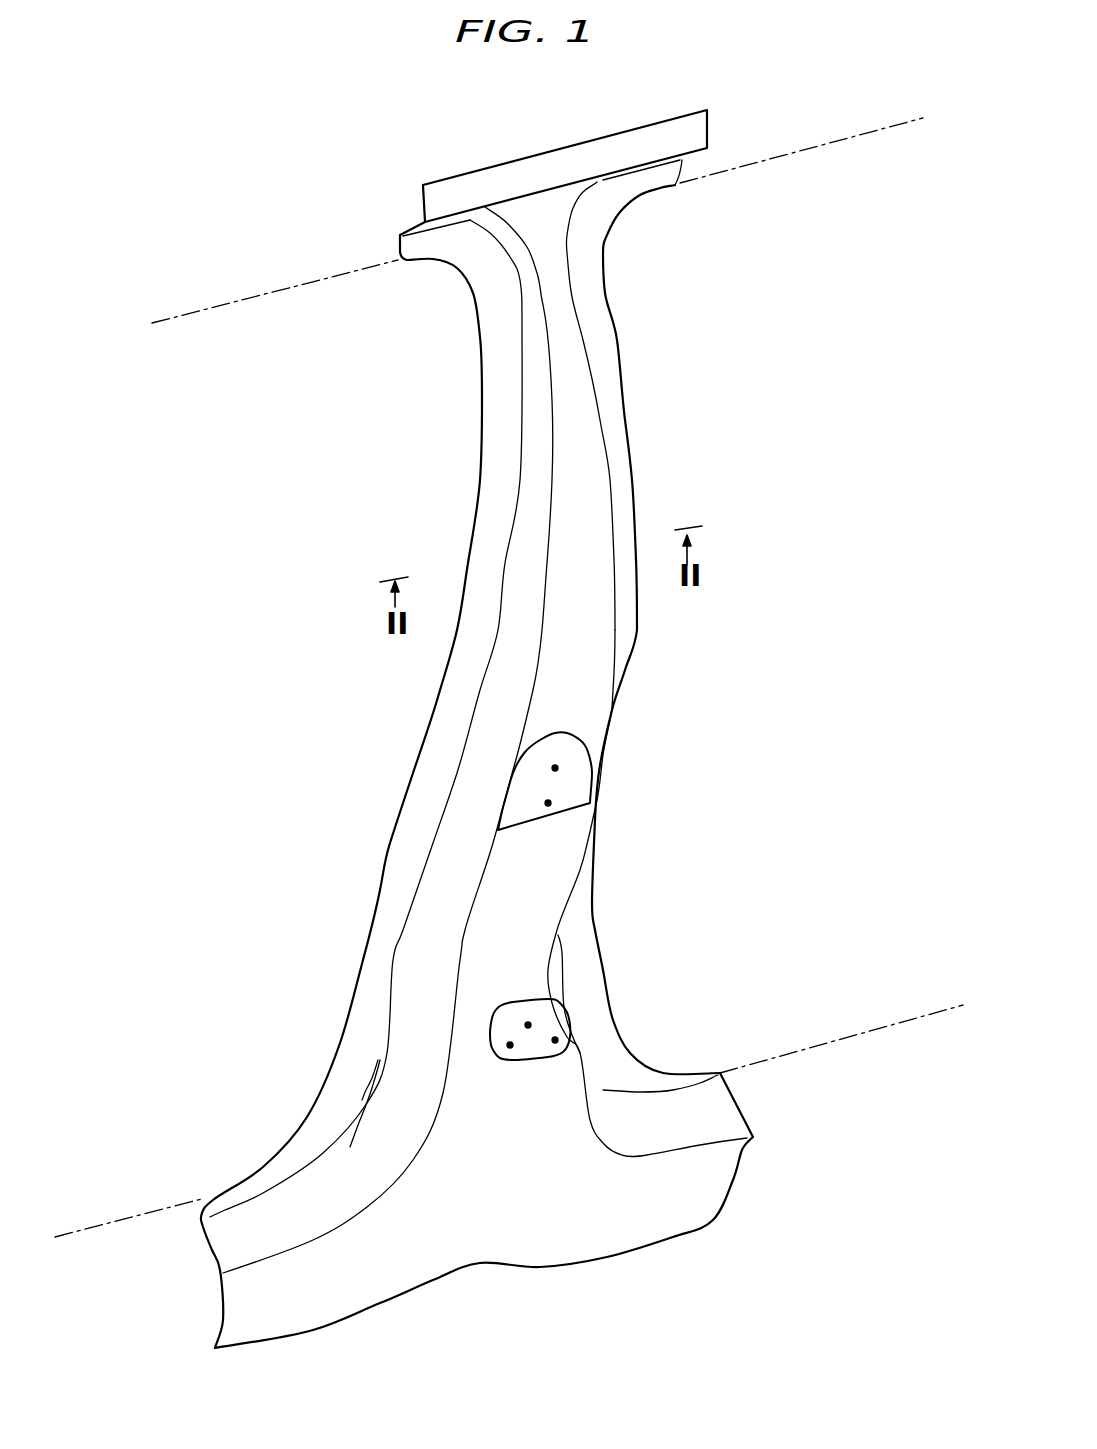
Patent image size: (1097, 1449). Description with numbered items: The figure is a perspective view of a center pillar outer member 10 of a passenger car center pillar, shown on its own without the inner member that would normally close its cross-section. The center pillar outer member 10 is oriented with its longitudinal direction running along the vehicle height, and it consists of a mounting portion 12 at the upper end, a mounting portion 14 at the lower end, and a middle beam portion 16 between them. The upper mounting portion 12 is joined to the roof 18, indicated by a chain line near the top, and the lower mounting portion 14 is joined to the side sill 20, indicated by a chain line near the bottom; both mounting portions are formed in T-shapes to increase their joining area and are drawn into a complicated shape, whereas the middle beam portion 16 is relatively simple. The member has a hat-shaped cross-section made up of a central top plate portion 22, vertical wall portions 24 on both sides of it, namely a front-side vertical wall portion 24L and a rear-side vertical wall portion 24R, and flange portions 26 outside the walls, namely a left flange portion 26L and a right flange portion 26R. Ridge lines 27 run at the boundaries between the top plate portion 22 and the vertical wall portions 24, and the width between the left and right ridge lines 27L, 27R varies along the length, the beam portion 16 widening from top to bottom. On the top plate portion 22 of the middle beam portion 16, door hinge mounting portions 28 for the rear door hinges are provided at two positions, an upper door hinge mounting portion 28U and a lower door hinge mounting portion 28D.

The center pillar outer member 10 is at (273, 445).
The mounting portion 12 is at (537, 222).
The mounting portion 14 is at (508, 1212).
The middle beam portion 16 is at (565, 688).
The roof 18 is at (287, 287).
The side sill 20 is at (117, 1223).
The top plate portion 22 is at (547, 880).
The vertical wall portions 24 is at (487, 718).
The vertical wall portion 24L is at (450, 872).
The vertical wall portion 24R is at (562, 1010).
The flange portions 26 is at (465, 803).
The flange portion 26L is at (365, 1020).
The flange portion 26R is at (580, 948).
The ridge lines 27 is at (500, 727).
The ridge line 27L is at (552, 492).
The ridge line 27R is at (610, 485).
The door hinge mounting portions 28 is at (403, 896).
The door hinge mounting portion 28U is at (537, 787).
The door hinge mounting portion 28D is at (507, 1020).